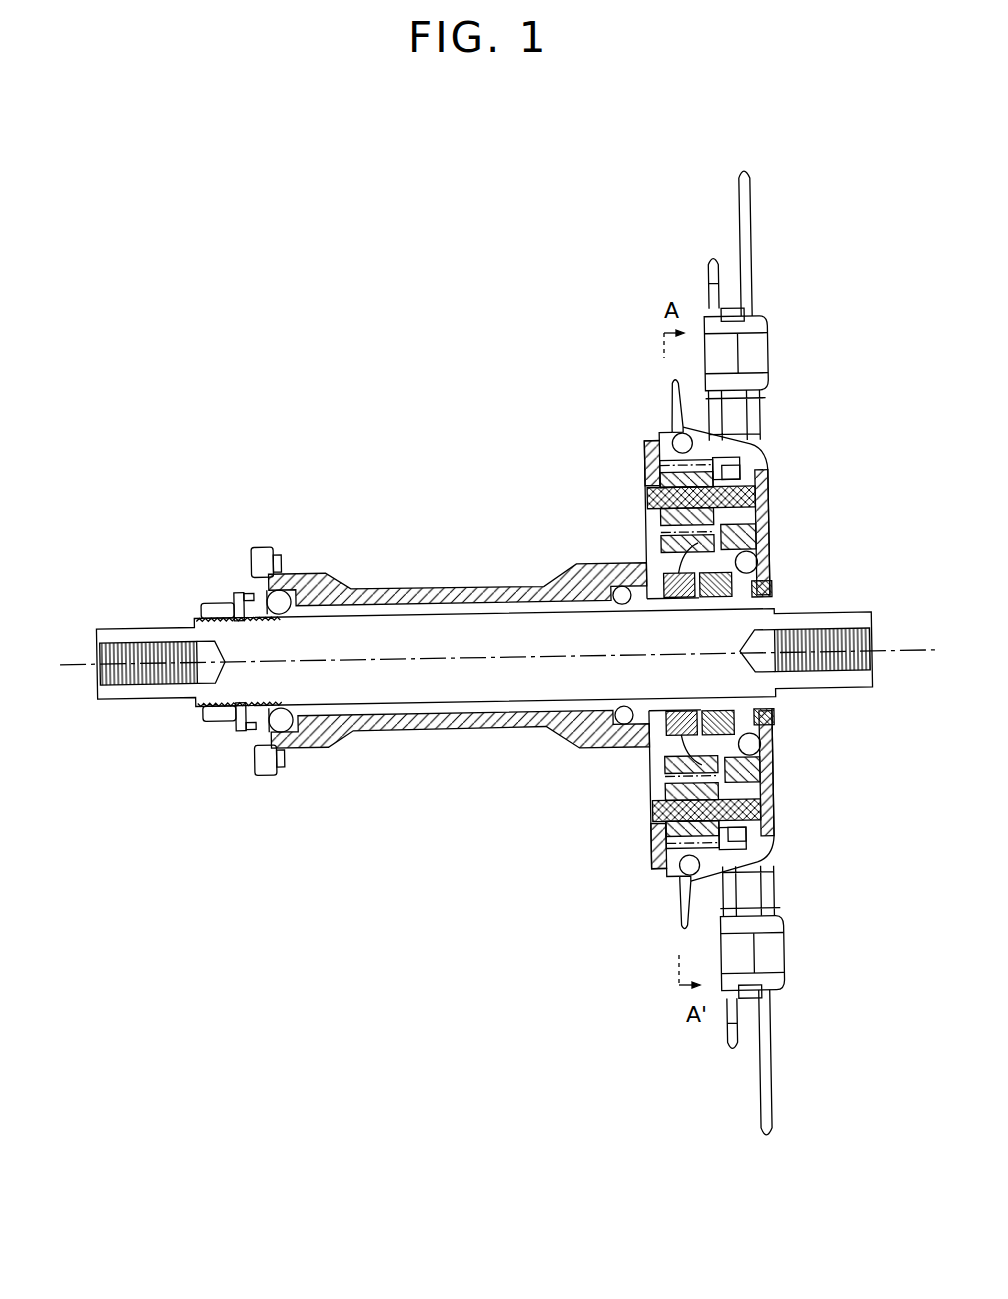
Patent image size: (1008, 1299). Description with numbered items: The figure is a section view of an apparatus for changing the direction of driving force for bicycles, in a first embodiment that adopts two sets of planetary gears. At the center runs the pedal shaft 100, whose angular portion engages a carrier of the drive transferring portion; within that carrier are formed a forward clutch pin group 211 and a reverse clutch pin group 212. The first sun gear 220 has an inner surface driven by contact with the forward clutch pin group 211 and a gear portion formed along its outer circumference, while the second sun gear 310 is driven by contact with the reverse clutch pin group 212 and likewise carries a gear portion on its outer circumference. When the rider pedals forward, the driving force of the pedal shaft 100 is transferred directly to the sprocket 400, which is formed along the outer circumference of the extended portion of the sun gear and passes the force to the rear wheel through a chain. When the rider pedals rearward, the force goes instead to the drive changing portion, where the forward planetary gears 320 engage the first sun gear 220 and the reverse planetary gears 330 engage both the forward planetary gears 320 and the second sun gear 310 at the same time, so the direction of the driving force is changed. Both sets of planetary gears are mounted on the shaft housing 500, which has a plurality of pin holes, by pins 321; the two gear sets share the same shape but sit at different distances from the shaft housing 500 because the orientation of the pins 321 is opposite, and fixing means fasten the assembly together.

The pedal shaft 100 is at (398, 705).
The shaft housing 500 is at (398, 595).
The sprocket 400 is at (668, 390).
The reverse planetary gears 330 is at (672, 480).
The reverse clutch pin group 212 is at (660, 538).
The forward clutch pin group 211 is at (770, 573).
The first sun gear 220 is at (765, 535).
The pins 321 is at (762, 495).
The forward planetary gears 320 is at (777, 823).
The second sun gear 310 is at (652, 760).